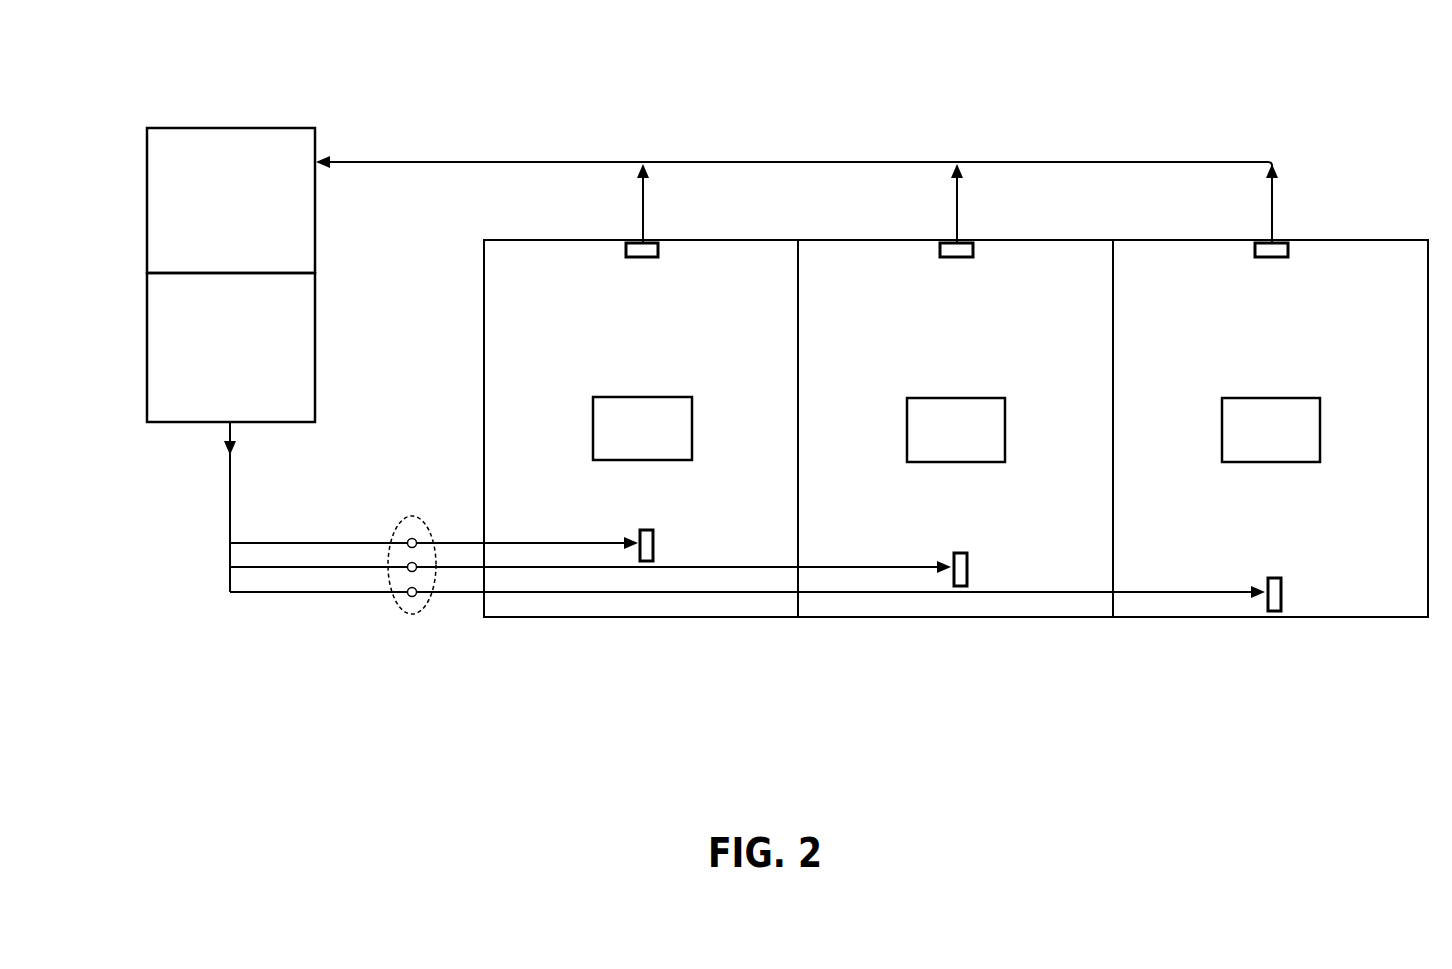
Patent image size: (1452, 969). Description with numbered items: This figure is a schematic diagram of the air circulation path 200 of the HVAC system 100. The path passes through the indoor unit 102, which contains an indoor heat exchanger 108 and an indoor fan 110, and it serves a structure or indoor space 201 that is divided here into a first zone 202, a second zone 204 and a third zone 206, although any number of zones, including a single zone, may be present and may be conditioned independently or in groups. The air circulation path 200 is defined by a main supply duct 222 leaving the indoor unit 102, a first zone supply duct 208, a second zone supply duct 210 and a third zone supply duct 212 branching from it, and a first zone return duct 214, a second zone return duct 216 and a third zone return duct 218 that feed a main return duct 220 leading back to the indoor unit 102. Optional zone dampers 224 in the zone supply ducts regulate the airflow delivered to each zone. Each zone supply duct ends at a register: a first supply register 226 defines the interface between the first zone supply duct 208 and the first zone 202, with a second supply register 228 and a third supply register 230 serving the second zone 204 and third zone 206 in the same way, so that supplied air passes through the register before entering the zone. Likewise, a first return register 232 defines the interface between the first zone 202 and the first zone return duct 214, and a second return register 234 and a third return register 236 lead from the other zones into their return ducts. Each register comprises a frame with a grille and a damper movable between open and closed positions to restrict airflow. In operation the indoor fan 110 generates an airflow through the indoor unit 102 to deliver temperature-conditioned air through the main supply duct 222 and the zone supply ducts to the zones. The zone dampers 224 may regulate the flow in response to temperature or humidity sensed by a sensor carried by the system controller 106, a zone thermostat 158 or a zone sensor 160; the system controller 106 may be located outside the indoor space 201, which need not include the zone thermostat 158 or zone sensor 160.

The HVAC system 100 is at (214, 97).
The indoor unit 102 is at (145, 273).
The indoor heat exchanger 108 is at (231, 347).
The indoor fan 110 is at (231, 200).
The system controller 106 is at (642, 462).
The zone thermostat 158 is at (957, 463).
The zone sensor 160 is at (1268, 463).
The air circulation path 200 is at (1156, 114).
The indoor space 201 is at (1398, 238).
The first zone 202 is at (665, 333).
The second zone 204 is at (980, 333).
The third zone 206 is at (1295, 333).
The first zone supply duct 208 is at (565, 543).
The second zone supply duct 210 is at (875, 567).
The third zone supply duct 212 is at (1190, 593).
The first zone return duct 214 is at (640, 212).
The second zone return duct 216 is at (960, 215).
The third zone return duct 218 is at (1276, 215).
The main return duct 220 is at (470, 160).
The main supply duct 222 is at (228, 500).
The zone dampers 224 is at (410, 613).
The first supply register 226 is at (656, 553).
The second supply register 228 is at (970, 575).
The third supply register 230 is at (1284, 600).
The first return register 232 is at (634, 258).
The second return register 234 is at (950, 258).
The third return register 236 is at (1270, 258).